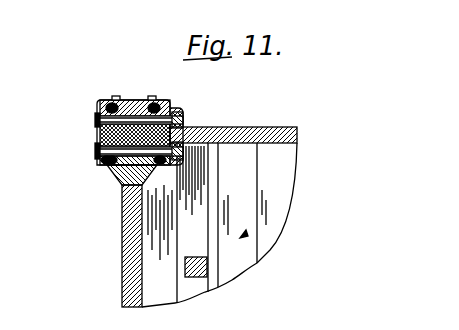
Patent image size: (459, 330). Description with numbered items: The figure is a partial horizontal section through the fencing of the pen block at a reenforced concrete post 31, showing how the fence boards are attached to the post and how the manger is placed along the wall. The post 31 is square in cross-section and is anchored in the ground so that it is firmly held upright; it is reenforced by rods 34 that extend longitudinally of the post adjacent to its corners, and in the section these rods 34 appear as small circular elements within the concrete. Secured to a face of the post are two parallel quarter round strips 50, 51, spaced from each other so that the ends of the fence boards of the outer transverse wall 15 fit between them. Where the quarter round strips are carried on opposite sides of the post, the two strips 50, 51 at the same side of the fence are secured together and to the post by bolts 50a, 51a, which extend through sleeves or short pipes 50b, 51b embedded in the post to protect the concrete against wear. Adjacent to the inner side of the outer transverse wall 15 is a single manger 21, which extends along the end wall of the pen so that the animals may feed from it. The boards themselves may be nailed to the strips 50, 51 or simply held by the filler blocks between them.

The outer transverse wall 15 is at (293, 126).
The manger 21 is at (243, 254).
The reenforced concrete post 31 is at (100, 105).
The reenforcing rods 34 is at (112, 101).
The quarter round strip 50 is at (173, 107).
The bolt 50a is at (132, 110).
The sleeve 50b is at (97, 129).
The quarter round strip 51 is at (178, 163).
The bolt 51a is at (97, 154).
The sleeve 51b is at (98, 166).